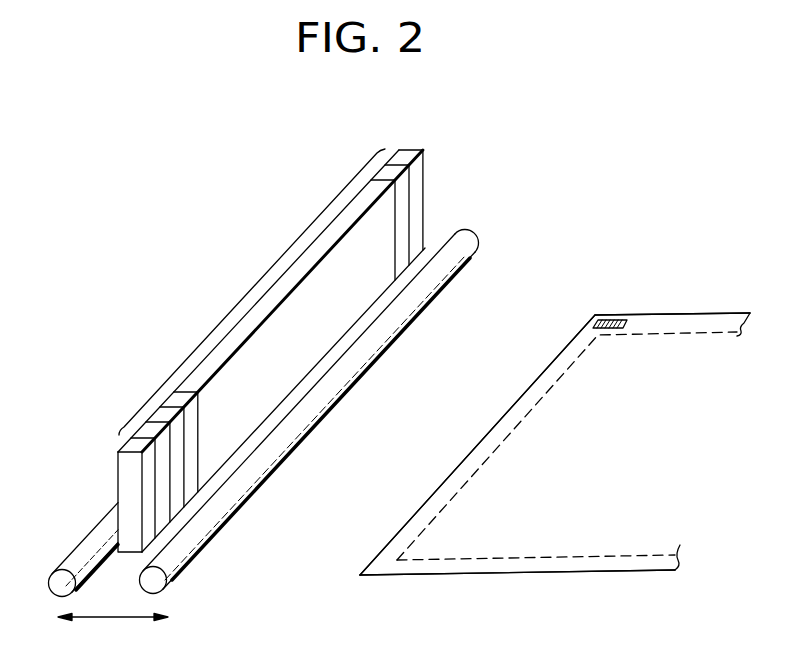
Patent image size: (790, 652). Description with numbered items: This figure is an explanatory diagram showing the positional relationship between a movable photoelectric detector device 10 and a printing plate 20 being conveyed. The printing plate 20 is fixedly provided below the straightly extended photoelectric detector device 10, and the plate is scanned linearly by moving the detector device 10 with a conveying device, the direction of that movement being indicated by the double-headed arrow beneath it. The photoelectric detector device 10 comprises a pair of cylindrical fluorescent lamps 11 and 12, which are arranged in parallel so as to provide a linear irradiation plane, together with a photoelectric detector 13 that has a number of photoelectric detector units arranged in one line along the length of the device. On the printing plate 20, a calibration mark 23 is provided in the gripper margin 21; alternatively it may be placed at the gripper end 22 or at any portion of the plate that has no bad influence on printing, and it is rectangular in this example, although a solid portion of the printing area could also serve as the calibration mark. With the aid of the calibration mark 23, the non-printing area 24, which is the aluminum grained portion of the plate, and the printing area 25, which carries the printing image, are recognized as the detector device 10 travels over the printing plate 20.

The movable photoelectric detector device 10 is at (442, 131).
The cylindrical fluorescent lamp 11 is at (66, 559).
The cylindrical fluorescent lamp 12 is at (470, 236).
The photoelectric detector 13 is at (259, 281).
The printing plate 20 is at (555, 442).
The gripper margin 21 is at (692, 301).
The gripper end 22 is at (582, 568).
The calibration mark 23 is at (609, 318).
The non-printing area 24 is at (420, 510).
The printing area 25 is at (502, 552).